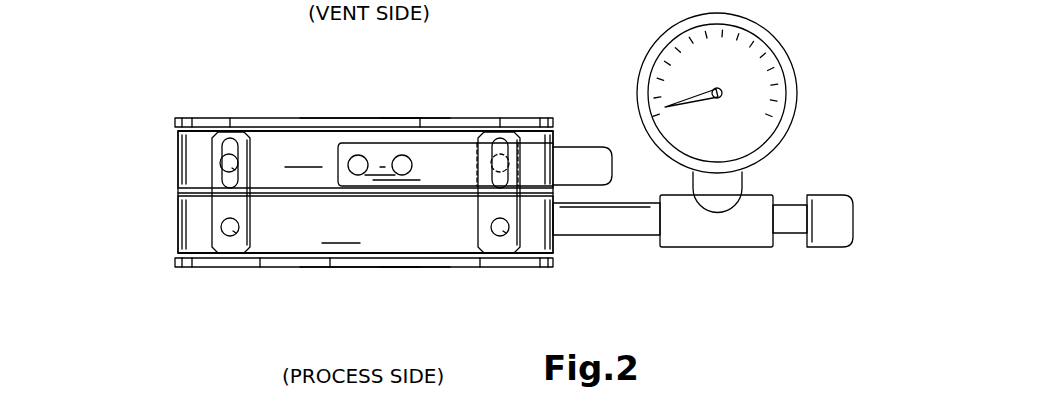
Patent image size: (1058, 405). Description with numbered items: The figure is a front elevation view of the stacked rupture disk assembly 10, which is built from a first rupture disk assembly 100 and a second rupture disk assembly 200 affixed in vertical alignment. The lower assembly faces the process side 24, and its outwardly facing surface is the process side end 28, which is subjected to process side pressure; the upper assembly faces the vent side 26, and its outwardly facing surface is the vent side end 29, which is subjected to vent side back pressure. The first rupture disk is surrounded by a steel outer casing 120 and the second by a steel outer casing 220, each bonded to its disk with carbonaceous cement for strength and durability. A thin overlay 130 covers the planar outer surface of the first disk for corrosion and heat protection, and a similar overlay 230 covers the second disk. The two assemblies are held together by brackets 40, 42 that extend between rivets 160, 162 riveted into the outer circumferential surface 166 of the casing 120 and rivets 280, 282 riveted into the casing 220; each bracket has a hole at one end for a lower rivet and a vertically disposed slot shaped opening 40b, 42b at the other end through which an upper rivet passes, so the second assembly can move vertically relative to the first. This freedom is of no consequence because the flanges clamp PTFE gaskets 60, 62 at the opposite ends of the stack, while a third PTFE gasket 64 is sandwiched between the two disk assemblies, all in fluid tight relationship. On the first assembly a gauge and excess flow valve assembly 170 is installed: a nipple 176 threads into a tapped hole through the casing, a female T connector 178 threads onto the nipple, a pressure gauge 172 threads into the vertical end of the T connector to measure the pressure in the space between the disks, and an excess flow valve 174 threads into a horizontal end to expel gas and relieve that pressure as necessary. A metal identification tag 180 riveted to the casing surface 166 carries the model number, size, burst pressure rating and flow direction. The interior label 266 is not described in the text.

The stacked rupture disk assembly 10 is at (180, 82).
The process side 24 is at (371, 280).
The vent side 26 is at (373, 100).
The process side end 28 is at (401, 280).
The vent side end 29 is at (397, 108).
The bracket 40 is at (226, 200).
The slot shaped opening 40b is at (222, 180).
The bracket 42 is at (498, 203).
The slot shaped opening 42b is at (497, 187).
The PTFE gasket 60 is at (237, 265).
The PTFE gasket 62 is at (245, 118).
The third PTFE gasket 64 is at (178, 192).
The first rupture disk assembly 100 is at (170, 237).
The outer casing 120 is at (296, 228).
The overlay 130 is at (453, 258).
The rivet 160 is at (224, 229).
The rivet 162 is at (503, 230).
The outer circumferential surface 166 is at (341, 232).
The gauge and excess flow valve assembly 170 is at (798, 155).
The pressure gauge 172 is at (792, 90).
The excess flow valve 174 is at (827, 232).
The nipple 176 is at (620, 222).
The T connector 178 is at (732, 233).
The metal identification tag 180 is at (450, 167).
The second rupture disk assembly 200 is at (170, 155).
The outer casing 220 is at (276, 125).
The overlay 230 is at (438, 130).
The vent side chamber 266 is at (381, 164).
The rivet 280 is at (225, 160).
The rivet 282 is at (508, 165).